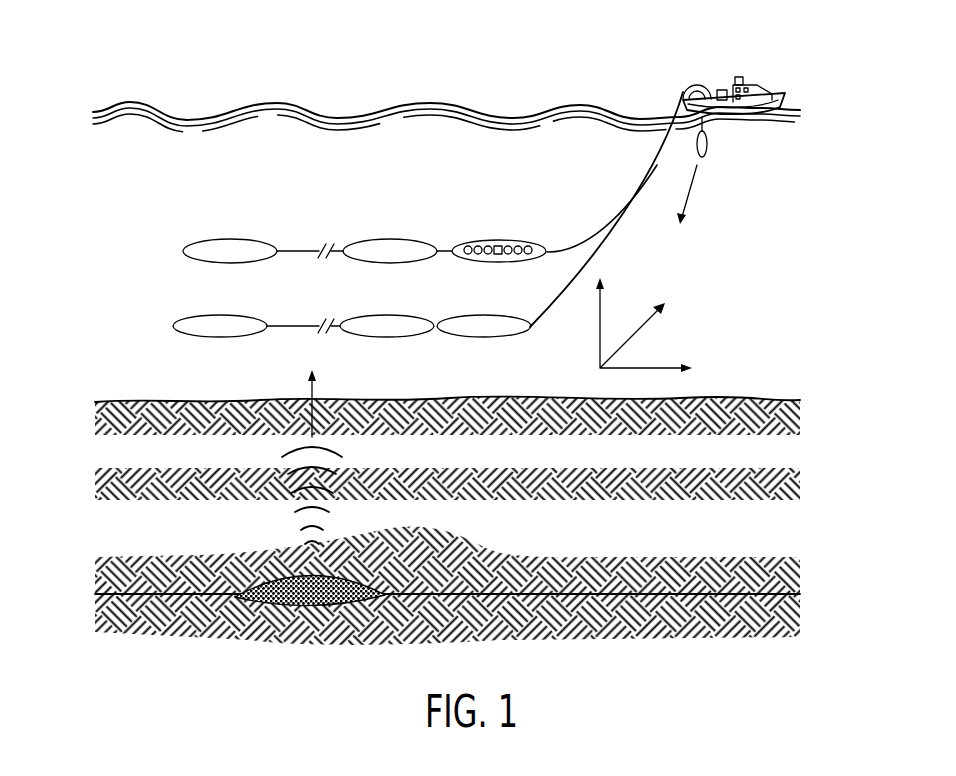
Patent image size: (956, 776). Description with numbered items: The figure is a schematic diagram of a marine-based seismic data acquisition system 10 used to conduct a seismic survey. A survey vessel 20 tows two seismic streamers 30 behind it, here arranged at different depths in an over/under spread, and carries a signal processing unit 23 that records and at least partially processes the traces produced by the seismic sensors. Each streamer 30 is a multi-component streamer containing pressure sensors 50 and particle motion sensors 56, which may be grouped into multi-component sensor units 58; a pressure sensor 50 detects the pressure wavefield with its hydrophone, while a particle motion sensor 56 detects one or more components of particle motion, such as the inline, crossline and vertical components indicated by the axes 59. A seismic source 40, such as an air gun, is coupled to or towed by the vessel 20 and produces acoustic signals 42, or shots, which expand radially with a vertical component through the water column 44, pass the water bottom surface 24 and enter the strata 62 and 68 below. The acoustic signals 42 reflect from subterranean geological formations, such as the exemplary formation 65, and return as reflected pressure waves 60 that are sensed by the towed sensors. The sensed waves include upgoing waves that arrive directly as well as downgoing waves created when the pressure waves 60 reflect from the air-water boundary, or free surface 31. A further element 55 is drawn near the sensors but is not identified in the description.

The marine-based seismic data acquisition system 10 is at (257, 71).
The survey vessel 20 is at (767, 93).
The signal processing unit 23 is at (722, 90).
The water bottom surface 24 is at (742, 398).
The seismic streamer 30 is at (648, 183).
The free surface 31 is at (394, 104).
The seismic source 40 is at (707, 148).
The acoustic signal 42 is at (690, 190).
The water column 44 is at (753, 285).
The pressure sensor 50 is at (488, 246).
The center source element 55 is at (497, 245).
The particle motion sensor 56 is at (528, 246).
The multi-component sensor unit 58 is at (197, 240).
The axes 59 is at (574, 370).
The pressure waves 60 is at (280, 516).
The strata 62 is at (527, 570).
The formation 65 is at (325, 602).
The strata 68 is at (687, 622).